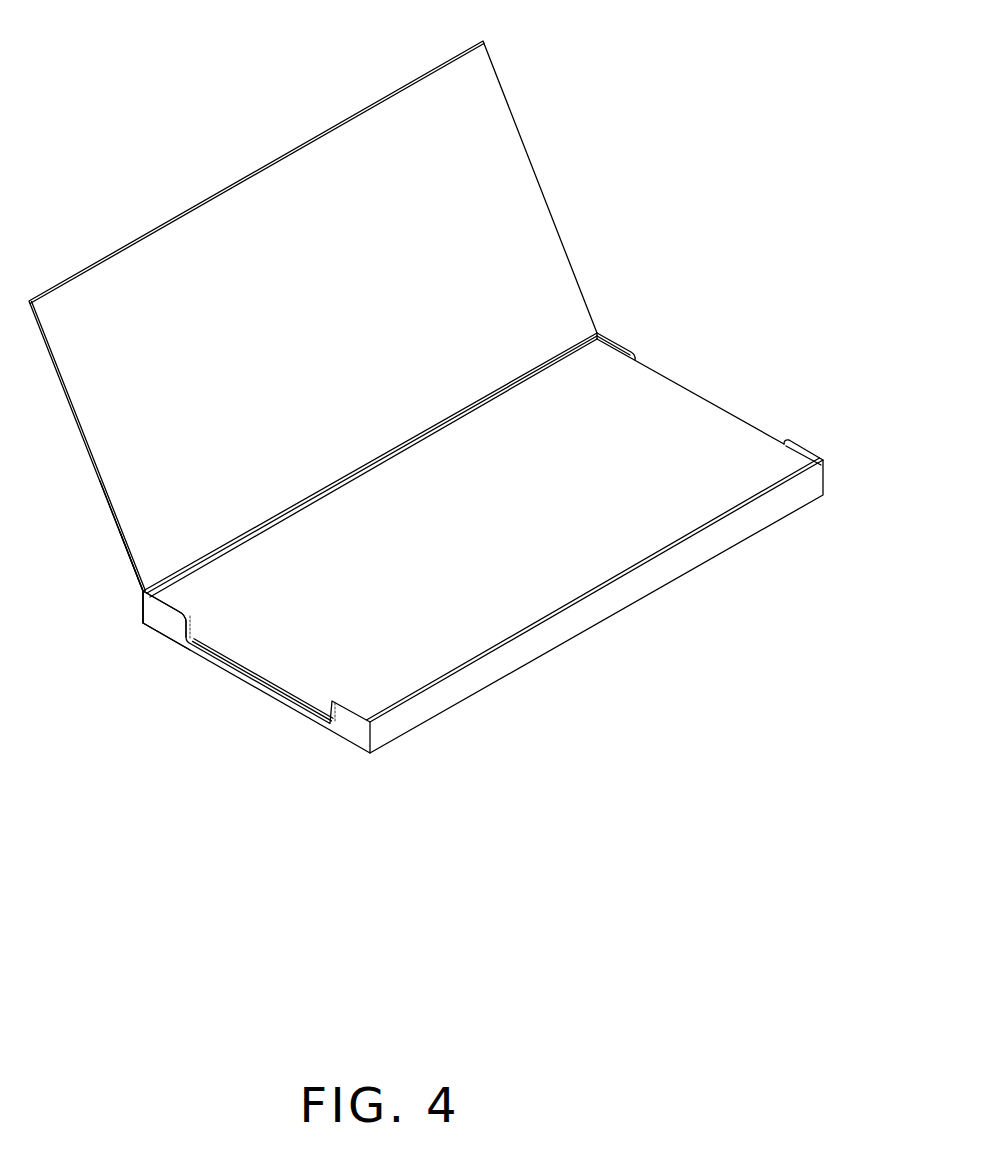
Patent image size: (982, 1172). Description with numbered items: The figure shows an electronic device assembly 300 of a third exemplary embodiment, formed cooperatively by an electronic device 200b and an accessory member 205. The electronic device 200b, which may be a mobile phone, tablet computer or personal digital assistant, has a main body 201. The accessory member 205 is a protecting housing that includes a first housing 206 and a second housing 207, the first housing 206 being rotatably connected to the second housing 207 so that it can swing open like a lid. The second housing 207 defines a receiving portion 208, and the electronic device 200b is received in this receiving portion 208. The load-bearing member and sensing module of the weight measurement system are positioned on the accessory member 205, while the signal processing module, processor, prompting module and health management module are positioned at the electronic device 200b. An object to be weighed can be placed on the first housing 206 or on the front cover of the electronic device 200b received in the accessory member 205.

The electronic device assembly 300 is at (313, 364).
The electronic device 200b is at (484, 527).
The main body 201 is at (655, 400).
The accessory member 205 is at (42, 668).
The first housing 206 is at (123, 507).
The second housing 207 is at (163, 623).
The receiving portion 208 is at (605, 342).